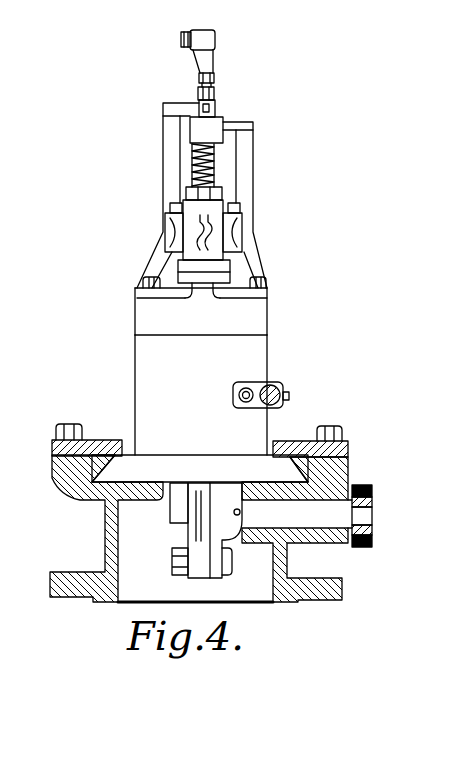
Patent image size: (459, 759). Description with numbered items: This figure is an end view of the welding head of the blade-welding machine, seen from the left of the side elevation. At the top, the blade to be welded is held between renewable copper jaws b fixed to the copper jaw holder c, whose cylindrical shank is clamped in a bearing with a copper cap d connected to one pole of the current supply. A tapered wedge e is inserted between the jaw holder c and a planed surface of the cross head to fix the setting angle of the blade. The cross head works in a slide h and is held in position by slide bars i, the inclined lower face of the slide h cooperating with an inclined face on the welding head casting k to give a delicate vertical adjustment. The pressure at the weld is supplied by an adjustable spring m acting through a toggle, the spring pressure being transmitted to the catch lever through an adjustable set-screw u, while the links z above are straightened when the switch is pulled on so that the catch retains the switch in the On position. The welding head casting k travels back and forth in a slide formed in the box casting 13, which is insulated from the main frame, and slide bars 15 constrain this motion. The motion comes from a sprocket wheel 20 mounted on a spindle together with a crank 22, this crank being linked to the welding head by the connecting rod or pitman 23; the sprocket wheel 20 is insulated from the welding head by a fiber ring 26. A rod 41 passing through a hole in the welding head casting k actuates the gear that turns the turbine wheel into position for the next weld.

The links z is at (212, 68).
The adjustable set-screw u is at (214, 79).
The adjustable spring m is at (215, 166).
The copper jaw holder c is at (220, 210).
The renewable copper jaws b is at (218, 231).
The copper cap d is at (173, 230).
The wedge e is at (215, 273).
The slide bars i is at (270, 287).
The slide h is at (255, 316).
The welding head casting k is at (142, 362).
The rod 41 is at (271, 384).
The slide bars 15 is at (288, 441).
The box casting 13 is at (54, 471).
The fiber ring 26 is at (380, 475).
The crank 22 is at (241, 512).
The connecting rod or pitman 23 is at (192, 528).
The sprocket wheel 20 is at (366, 549).